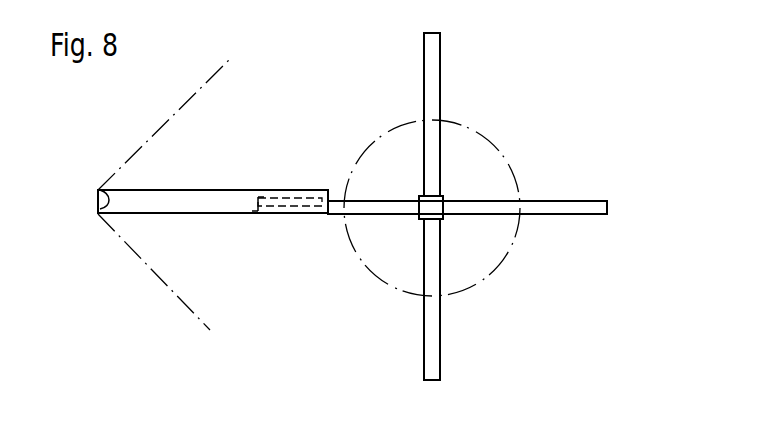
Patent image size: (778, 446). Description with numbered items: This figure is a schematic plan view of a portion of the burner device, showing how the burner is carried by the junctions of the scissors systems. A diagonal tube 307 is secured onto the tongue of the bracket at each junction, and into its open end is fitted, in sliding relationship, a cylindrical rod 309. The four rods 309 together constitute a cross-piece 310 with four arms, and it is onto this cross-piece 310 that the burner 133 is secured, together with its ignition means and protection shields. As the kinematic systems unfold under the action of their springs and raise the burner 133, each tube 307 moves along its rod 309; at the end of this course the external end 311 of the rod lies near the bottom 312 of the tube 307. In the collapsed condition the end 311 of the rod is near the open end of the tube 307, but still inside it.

The diagonal tube 307 is at (156, 191).
The bottom of the tube 312 is at (110, 198).
The external end of the rod 311 is at (258, 210).
The cylindrical rod 309 is at (340, 212).
The burner 133 is at (486, 258).
The cross-piece 310 is at (519, 182).